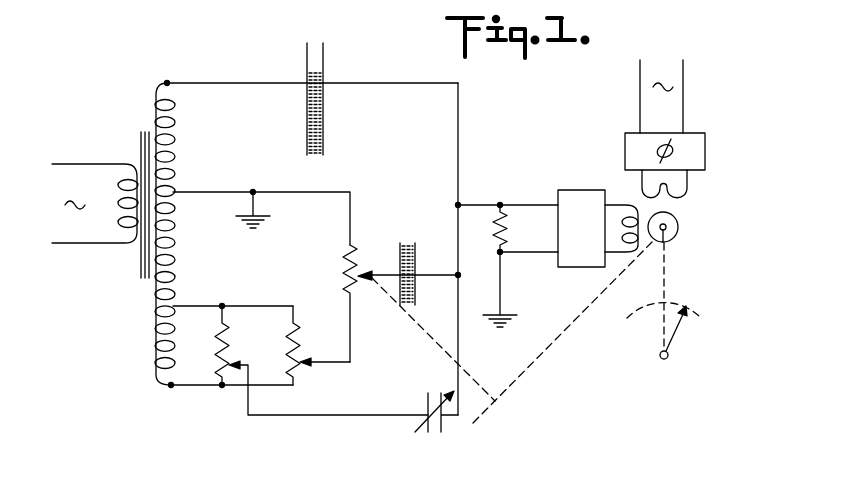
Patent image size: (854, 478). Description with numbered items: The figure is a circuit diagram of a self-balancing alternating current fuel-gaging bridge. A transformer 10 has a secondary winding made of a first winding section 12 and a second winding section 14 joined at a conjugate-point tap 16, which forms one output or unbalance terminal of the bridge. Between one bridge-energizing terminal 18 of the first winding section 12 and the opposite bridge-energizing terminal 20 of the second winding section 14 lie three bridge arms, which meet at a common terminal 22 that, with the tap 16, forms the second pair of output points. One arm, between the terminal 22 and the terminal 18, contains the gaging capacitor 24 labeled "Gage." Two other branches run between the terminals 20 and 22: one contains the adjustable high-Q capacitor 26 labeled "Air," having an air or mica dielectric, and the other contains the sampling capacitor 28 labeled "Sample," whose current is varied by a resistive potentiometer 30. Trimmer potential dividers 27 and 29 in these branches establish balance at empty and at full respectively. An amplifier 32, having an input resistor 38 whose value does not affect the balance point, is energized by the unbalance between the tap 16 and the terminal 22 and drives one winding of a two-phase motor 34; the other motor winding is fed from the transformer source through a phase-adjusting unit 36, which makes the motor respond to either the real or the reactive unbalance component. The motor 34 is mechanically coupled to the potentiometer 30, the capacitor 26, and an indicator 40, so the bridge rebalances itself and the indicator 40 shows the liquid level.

The transformer 10 is at (140, 142).
The first winding section 12 is at (177, 123).
The second winding section 14 is at (150, 302).
The conjugate-point tap 16 is at (174, 191).
The bridge-energizing terminal 18 is at (170, 81).
The bridge-energizing terminal 20 is at (170, 388).
The common terminal 22 is at (456, 205).
The gaging capacitor 24 is at (324, 58).
The high-Q capacitor 26 is at (426, 406).
The trimmer potential divider 27 is at (232, 331).
The sampling capacitor 28 is at (417, 298).
The trimmer potential divider 29 is at (299, 327).
The resistive potentiometer 30 is at (342, 254).
The amplifier 32 is at (578, 190).
The two-phase motor 34 is at (678, 222).
The phase-adjusting unit 36 is at (705, 150).
The input resistor 38 is at (507, 232).
The indicator 40 is at (673, 343).